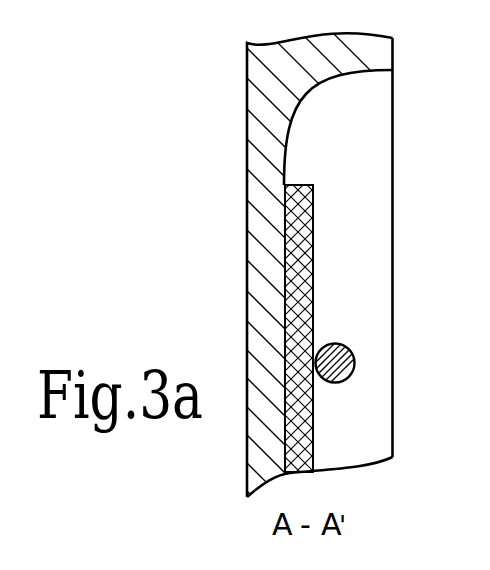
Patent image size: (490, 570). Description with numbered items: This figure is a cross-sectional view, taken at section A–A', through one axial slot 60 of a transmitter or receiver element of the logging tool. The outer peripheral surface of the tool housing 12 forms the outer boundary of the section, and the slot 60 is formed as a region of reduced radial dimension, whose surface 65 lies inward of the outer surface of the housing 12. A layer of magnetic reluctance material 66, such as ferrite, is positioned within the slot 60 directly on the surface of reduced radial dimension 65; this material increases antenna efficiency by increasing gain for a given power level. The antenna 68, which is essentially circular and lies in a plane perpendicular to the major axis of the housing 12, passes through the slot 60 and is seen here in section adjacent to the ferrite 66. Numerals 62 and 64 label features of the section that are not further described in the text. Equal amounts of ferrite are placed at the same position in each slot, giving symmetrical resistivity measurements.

The tool housing 12 is at (357, 52).
The axial slot 60 is at (398, 270).
The cavity 62 is at (365, 208).
The curved inner surface 64 is at (345, 78).
The surface of reduced radial dimension 65 is at (285, 204).
The magnetic reluctance material 66 is at (297, 252).
The antenna 68 is at (353, 355).